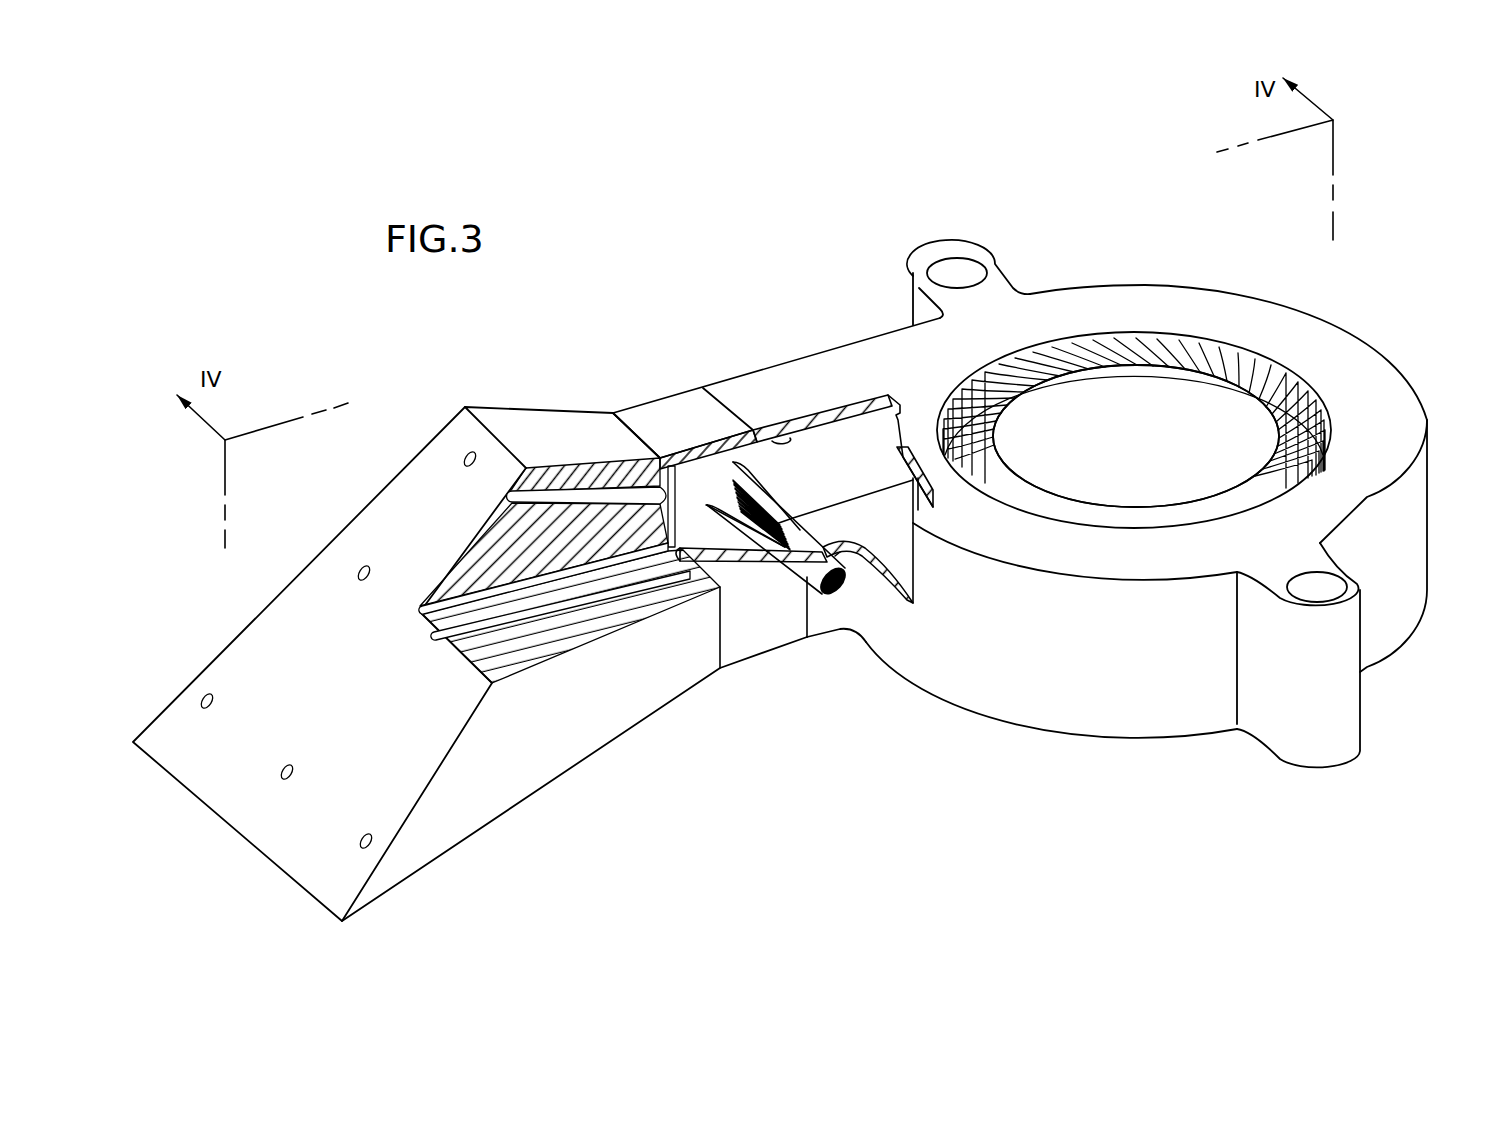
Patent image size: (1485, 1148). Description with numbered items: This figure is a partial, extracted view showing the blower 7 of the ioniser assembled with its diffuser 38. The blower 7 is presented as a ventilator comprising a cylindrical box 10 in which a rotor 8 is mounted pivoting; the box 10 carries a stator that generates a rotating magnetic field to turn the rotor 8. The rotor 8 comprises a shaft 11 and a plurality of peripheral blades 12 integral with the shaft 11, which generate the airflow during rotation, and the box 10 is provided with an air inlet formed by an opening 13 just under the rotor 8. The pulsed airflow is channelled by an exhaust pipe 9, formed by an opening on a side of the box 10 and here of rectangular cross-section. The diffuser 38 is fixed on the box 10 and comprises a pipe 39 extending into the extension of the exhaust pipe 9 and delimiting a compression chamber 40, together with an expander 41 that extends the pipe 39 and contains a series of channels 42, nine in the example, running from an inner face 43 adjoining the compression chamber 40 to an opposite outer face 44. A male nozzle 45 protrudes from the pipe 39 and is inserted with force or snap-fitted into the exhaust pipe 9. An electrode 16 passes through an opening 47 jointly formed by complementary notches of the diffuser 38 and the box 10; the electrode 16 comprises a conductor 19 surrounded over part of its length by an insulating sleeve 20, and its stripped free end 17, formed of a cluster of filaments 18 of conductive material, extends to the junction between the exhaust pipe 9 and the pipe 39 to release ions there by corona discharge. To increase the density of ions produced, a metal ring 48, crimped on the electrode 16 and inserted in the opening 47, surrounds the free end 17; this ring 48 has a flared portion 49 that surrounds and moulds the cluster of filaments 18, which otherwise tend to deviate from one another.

The blower 7 is at (1380, 347).
The rotor 8 is at (1225, 358).
The exhaust pipe 9 is at (861, 470).
The box 10 is at (1088, 707).
The shaft 11 is at (1149, 445).
The peripheral blades 12 is at (1329, 433).
The opening 13 is at (1141, 338).
The electrode 16 is at (840, 552).
The free end 17 is at (762, 493).
The cluster of filaments 18 is at (773, 510).
The conductor 19 is at (838, 593).
The sleeve 20 is at (860, 555).
The diffuser 38 is at (465, 410).
The pipe 39 is at (667, 410).
The compression chamber 40 is at (718, 497).
The expander 41 is at (557, 748).
The channels 42 is at (573, 497).
The inner face 43 is at (688, 550).
The outer face 44 is at (293, 607).
The male nozzle 45 is at (779, 432).
The opening 47 is at (792, 577).
The metal ring 48 is at (807, 526).
The flared portion 49 is at (720, 520).